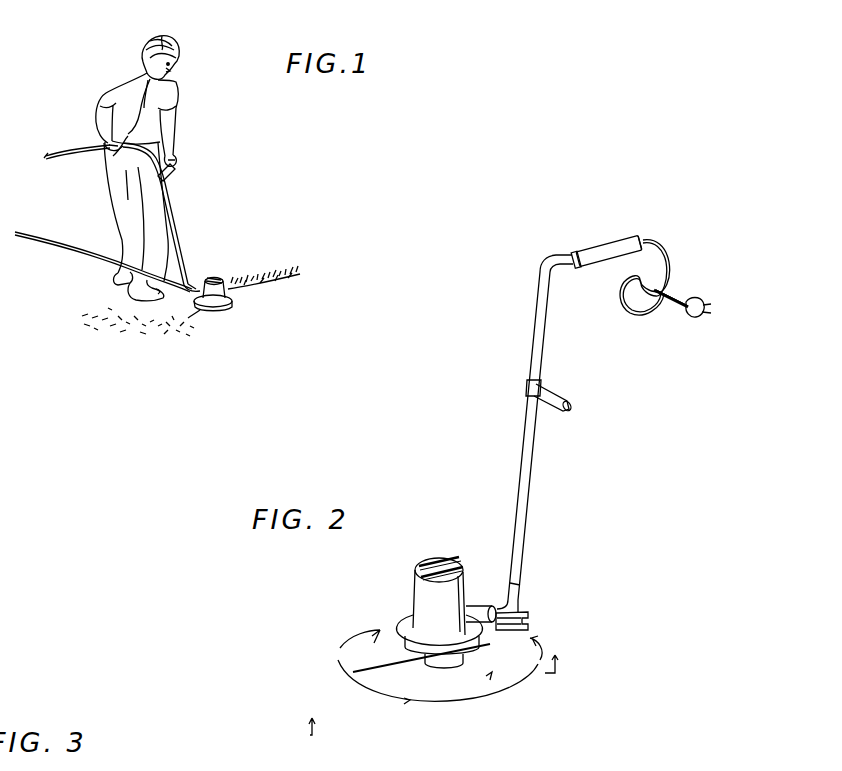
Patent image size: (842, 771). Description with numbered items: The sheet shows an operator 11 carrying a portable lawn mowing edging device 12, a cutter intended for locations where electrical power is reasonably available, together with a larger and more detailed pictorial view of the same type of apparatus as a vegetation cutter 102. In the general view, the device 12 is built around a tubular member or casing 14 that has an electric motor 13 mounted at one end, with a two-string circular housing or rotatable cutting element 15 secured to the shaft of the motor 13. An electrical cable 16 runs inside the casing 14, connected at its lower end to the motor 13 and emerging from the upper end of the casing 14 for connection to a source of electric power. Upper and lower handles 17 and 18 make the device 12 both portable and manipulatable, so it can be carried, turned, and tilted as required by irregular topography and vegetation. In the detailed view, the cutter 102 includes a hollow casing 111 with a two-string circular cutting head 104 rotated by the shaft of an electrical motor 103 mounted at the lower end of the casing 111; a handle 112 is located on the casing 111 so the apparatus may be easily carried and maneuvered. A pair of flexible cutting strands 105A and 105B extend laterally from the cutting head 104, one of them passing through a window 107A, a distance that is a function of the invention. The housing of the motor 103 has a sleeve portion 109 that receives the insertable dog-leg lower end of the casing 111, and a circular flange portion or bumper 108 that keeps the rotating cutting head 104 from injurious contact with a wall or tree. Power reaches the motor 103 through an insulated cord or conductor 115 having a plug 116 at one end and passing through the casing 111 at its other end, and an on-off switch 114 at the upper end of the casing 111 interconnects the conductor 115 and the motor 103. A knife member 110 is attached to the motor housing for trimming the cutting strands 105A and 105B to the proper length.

In FIG. 1, the operator 11 is at (207, 114).
In FIG. 1, the lawn mowing edging device 12 is at (191, 218).
In FIG. 1, the electric motor 13 is at (217, 276).
In FIG. 1, the tubular member or casing 14 is at (183, 258).
In FIG. 1, the two-string circular housing or rotatable cutting element 15 is at (230, 310).
In FIG. 1, the electrical cable 16 is at (62, 152).
In FIG. 1, the upper handle 17 is at (125, 153).
In FIG. 1, the lower handle 18 is at (176, 170).
In FIG. 2, the vegetation cutter 102 is at (553, 447).
In FIG. 2, the electrical motor 103 is at (438, 557).
In FIG. 2, the two-string circular cutting head 104 is at (466, 658).
In FIG. 2, the flexible cutting strand 105A is at (382, 670).
In FIG. 2, the flexible cutting strand 105B is at (534, 636).
In FIG. 2, the window 107A is at (423, 670).
In FIG. 2, the circular flange portion or bumper 108 is at (404, 622).
In FIG. 2, the sleeve portion 109 is at (484, 604).
In FIG. 2, the knife member 110 is at (530, 610).
In FIG. 2, the hollow casing 111 is at (520, 458).
In FIG. 2, the handle 112 is at (560, 399).
In FIG. 2, the on-off switch 114 is at (559, 251).
In FIG. 2, the insulated cord or conductor 115 is at (664, 250).
In FIG. 2, the plug 116 is at (693, 319).